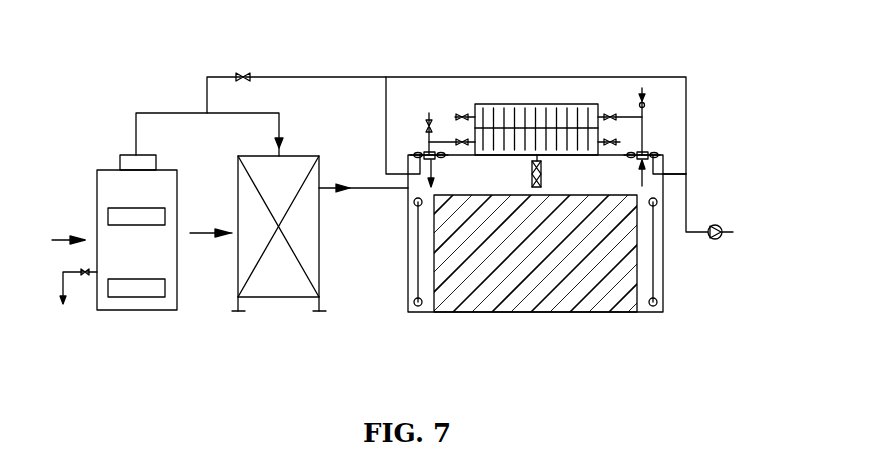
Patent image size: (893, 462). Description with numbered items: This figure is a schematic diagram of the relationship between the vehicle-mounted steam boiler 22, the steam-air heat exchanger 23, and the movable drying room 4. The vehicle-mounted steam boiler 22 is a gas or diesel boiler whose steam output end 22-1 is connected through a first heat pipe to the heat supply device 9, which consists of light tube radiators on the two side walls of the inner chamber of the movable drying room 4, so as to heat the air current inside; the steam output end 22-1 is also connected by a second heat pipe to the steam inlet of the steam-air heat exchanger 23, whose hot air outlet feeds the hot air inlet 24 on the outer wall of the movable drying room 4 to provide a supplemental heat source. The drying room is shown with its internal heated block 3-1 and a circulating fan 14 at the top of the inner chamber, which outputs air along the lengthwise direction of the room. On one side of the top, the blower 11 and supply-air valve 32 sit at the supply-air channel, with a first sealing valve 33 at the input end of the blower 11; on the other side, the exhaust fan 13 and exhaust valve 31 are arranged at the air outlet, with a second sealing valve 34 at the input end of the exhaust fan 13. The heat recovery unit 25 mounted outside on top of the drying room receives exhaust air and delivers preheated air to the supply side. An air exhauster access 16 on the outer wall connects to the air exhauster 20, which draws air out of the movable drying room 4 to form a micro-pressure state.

The vehicle-mounted steam boiler 22 is at (105, 277).
The steam output end 22-1 is at (99, 129).
The steam-air heat exchanger 23 is at (253, 272).
The hot air inlet 24 is at (363, 213).
The movable drying room 4 is at (480, 273).
The heating block 3-1 is at (638, 258).
The heat supply device 9 is at (536, 256).
The blower 11 is at (337, 97).
The first sealing valve 33 is at (372, 80).
The supply-air valve 32 is at (441, 79).
The heat recovery unit 25 is at (545, 80).
The exhaust valve 31 is at (640, 77).
The second sealing valve 34 is at (693, 84).
The exhaust fan 13 is at (688, 133).
The circulating fan 14 is at (565, 173).
The air exhauster access 16 is at (706, 168).
The air exhauster 20 is at (760, 208).